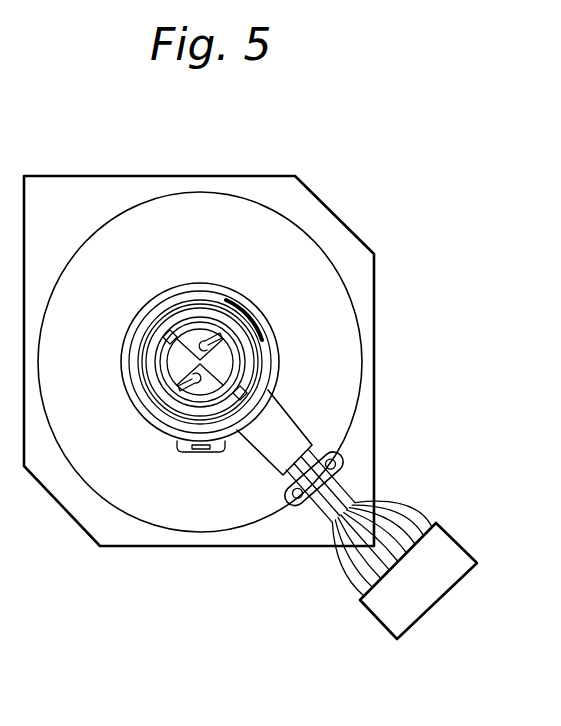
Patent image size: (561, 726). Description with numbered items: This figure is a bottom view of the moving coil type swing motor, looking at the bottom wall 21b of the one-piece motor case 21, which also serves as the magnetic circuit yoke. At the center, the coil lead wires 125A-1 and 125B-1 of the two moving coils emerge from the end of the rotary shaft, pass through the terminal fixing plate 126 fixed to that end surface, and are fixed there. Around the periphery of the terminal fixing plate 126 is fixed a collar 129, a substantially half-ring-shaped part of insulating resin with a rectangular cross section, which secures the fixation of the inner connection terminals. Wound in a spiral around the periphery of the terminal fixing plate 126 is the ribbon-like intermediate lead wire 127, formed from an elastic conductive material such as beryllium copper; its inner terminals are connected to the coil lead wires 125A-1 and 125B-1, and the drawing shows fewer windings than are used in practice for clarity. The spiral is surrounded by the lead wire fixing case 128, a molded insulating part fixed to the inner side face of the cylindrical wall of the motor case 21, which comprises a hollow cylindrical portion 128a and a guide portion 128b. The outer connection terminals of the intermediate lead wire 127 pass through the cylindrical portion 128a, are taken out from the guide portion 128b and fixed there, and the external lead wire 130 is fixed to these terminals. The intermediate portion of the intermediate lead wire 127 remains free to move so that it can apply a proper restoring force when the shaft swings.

The motor case 21 is at (107, 175).
The bottom wall 21b is at (240, 208).
The coil lead wire 125A-1 is at (199, 340).
The coil lead wire 125B-1 is at (200, 388).
The terminal fixing plate 126 is at (177, 360).
The intermediate lead wire 127 is at (163, 397).
The lead wire fixing case 128 is at (255, 299).
The hollow cylindrical portion 128a is at (265, 322).
The guide portion 128b is at (280, 420).
The collar 129 is at (155, 340).
The external lead wire 130 is at (298, 489).